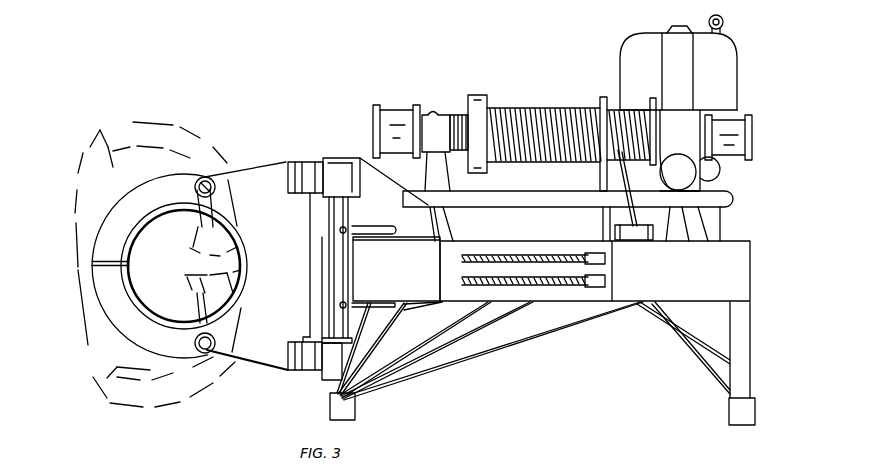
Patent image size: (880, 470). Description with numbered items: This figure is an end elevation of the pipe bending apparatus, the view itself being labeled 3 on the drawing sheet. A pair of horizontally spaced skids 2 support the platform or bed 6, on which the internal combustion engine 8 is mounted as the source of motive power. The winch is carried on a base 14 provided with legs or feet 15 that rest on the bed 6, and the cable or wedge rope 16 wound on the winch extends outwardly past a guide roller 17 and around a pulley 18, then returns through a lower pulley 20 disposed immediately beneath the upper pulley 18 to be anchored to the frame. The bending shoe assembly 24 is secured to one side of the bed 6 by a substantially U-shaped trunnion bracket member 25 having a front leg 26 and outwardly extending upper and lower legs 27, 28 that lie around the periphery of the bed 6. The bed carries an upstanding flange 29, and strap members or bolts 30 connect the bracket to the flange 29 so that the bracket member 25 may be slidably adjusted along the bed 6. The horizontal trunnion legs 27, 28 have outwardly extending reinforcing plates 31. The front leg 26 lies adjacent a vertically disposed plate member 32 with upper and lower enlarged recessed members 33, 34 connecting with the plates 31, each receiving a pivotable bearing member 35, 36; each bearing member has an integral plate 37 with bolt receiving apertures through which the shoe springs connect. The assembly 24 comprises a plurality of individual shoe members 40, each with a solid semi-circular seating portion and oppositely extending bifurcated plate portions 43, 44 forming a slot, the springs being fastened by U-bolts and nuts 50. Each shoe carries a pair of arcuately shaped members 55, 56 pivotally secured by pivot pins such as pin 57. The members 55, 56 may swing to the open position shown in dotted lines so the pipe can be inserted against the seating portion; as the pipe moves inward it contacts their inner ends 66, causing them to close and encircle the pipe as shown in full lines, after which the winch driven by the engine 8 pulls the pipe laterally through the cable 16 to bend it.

The runners or skids 2 is at (748, 413).
The bearing 3 is at (432, 120).
The platform or bed 6 is at (740, 265).
The internal combustion engine 8 is at (730, 90).
The base 14 is at (733, 200).
The legs or feet 15 is at (713, 230).
The cable or wedge rope 16 is at (505, 112).
The guide roller 17 is at (645, 237).
The pulley 18 is at (590, 255).
The lower pulley 20 is at (608, 278).
The bending shoe assembly 24 is at (226, 169).
The trunnion bracket member 25 is at (327, 307).
The front leg 26 is at (353, 254).
The upper leg 27 is at (422, 240).
The lower leg 28 is at (403, 303).
The upstanding flange 29 is at (453, 223).
The strap members or bolts 30 is at (350, 230).
The reinforcing plates 31 is at (375, 188).
The vertically disposed plate member 32 is at (330, 218).
The upper recessed member 33 is at (330, 157).
The lower recessed member 34 is at (328, 380).
The bearing member 35 is at (328, 172).
The bearing member 36 is at (333, 365).
The integral plate 37 is at (288, 167).
The shoe member 40 is at (107, 313).
The bifurcated plate portion 43 is at (204, 177).
The bifurcated plate portion 44 is at (240, 357).
The nuts 50 is at (215, 343).
The arcuately shaped member 55 is at (113, 137).
The arcuately shaped member 56 is at (107, 290).
The pivot pin 57 is at (205, 177).
The inner ends 66 is at (190, 240).